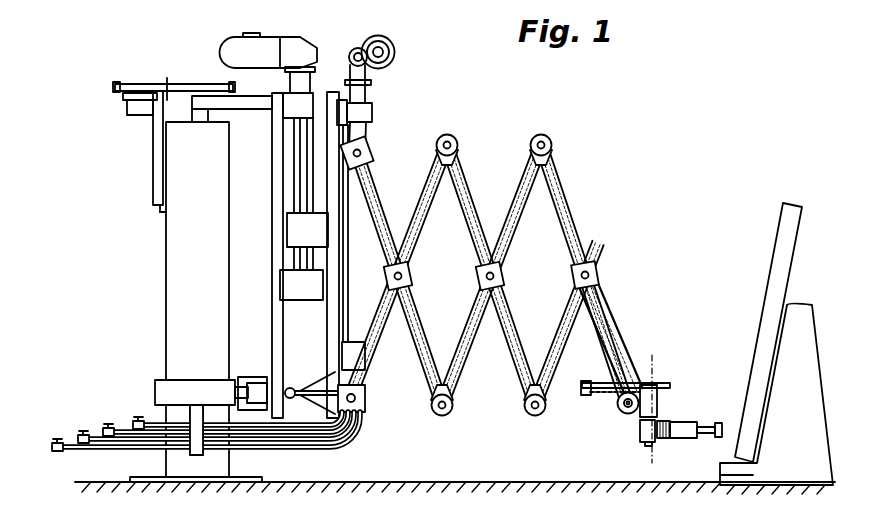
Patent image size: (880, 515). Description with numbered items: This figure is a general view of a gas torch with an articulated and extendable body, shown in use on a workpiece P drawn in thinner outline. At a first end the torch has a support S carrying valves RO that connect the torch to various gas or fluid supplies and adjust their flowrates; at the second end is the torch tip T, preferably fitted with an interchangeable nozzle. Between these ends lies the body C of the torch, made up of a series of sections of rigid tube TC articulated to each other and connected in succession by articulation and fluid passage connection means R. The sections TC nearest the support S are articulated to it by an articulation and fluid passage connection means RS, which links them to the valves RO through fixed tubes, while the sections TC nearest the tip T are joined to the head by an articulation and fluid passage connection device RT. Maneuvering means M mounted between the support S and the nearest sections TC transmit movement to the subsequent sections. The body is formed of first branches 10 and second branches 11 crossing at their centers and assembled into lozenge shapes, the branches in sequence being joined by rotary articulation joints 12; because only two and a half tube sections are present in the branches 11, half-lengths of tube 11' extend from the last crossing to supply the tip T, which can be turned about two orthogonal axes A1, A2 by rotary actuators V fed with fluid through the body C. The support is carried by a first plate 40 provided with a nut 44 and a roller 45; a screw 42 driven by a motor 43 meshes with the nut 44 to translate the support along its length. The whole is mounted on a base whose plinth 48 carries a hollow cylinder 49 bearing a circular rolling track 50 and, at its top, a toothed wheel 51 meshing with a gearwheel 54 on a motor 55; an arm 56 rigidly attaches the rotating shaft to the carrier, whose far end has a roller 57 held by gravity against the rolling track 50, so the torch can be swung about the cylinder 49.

The first articulated branch 10 is at (588, 222).
The second articulated branch 11 is at (473, 275).
The half-length of tube 11' is at (618, 337).
The rotary articulation joint 12 is at (598, 265).
The first plate 40 is at (335, 330).
The screw 42 is at (300, 152).
The motor 43 is at (265, 48).
The nut 44 is at (308, 105).
The roller 45 is at (288, 386).
The plinth 48 is at (245, 480).
The hollow cylinder 49 is at (165, 300).
The circular rolling track 50 is at (190, 386).
The toothed wheel 51 is at (192, 83).
The gearwheel 54 is at (142, 83).
The motor 55 is at (137, 113).
The arm 56 is at (249, 108).
The roller 57 is at (245, 377).
The support S is at (373, 95).
The maneuvering means M is at (357, 214).
The body of the torch C is at (529, 125).
The articulation and fluid passage connection means R is at (447, 135).
The section of rigid tube TC is at (388, 200).
The articulation and fluid passage connection means RS is at (370, 414).
The valves RO is at (138, 420).
The articulation and fluid passage connection device RT is at (630, 416).
The first orthogonal axis A1 is at (618, 410).
The second orthogonal axis A2 is at (652, 362).
The torch tip T is at (688, 373).
The rotary actuator V is at (648, 403).
The workpiece P is at (770, 288).